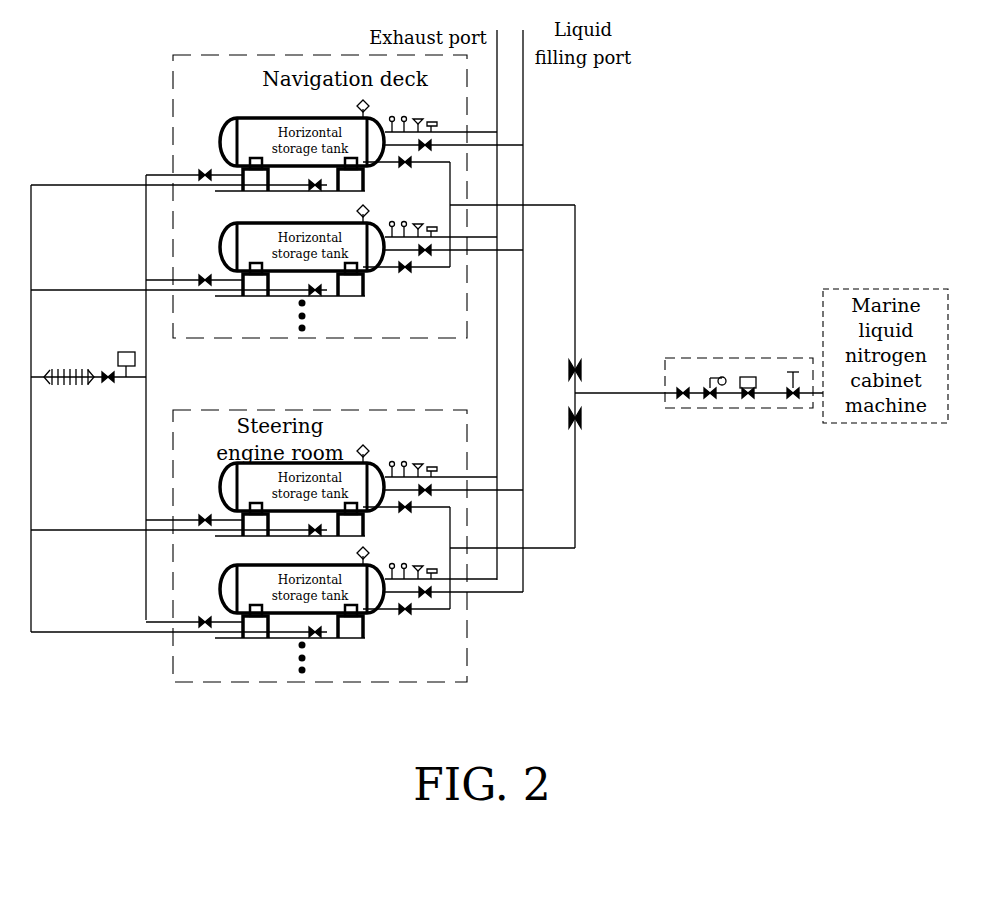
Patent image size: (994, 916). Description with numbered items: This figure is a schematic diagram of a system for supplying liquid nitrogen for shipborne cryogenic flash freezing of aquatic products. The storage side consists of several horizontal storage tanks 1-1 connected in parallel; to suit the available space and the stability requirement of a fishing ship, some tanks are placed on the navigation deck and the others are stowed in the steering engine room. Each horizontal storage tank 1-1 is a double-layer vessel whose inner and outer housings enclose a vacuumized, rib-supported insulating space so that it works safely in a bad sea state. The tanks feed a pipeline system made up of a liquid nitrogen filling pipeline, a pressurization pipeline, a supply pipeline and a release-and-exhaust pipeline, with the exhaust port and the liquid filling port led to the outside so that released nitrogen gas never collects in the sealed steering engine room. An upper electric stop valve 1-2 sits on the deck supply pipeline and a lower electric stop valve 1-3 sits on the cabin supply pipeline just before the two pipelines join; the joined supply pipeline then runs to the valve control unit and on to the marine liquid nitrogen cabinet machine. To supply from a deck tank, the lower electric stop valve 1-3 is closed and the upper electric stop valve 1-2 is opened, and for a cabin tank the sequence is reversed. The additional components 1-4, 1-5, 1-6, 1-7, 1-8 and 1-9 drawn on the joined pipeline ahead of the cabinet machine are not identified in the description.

The horizontal storage tank 1-1 is at (262, 135).
The upper electric stop valve 1-2 is at (580, 360).
The lower electric stop valve 1-3 is at (580, 426).
The stop valve 1-4 is at (681, 388).
The valve 1-5 is at (711, 400).
The safety valve 1-6 is at (721, 378).
The valve 1-7 is at (752, 400).
The pressure gauge 1-8 is at (752, 377).
The relief valve 1-9 is at (792, 370).